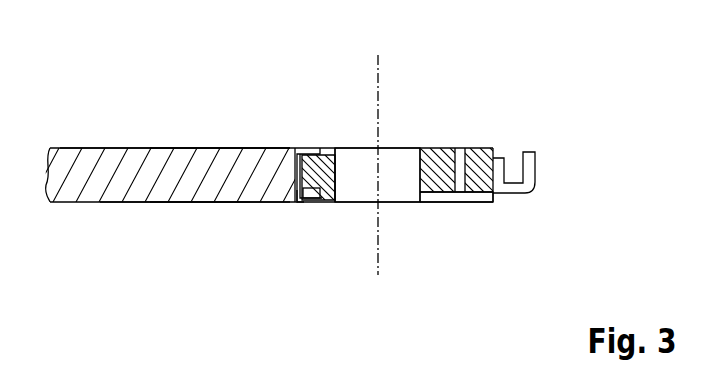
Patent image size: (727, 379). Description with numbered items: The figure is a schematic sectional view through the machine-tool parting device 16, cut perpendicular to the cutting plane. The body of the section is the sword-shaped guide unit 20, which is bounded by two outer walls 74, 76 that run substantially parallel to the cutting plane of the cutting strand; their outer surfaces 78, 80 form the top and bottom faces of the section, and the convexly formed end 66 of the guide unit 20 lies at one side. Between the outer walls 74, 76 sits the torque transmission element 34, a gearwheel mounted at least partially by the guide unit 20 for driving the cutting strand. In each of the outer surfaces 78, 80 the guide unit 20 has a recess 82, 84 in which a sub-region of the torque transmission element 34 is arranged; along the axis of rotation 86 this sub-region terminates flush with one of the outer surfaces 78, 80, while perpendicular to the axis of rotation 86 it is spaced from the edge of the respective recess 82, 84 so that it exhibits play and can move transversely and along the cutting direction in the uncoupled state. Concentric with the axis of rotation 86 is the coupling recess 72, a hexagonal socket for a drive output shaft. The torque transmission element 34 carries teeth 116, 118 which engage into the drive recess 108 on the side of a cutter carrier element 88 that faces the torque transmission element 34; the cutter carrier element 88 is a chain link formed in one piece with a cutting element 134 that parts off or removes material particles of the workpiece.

The machine-tool parting device 16 is at (532, 74).
The guide unit 20 is at (70, 203).
The torque transmission element 34 is at (325, 203).
The convexly formed end 66 is at (563, 237).
The coupling recess 72 is at (398, 182).
The outer wall 74 is at (172, 203).
The outer wall 76 is at (137, 147).
The outer surface 78 is at (222, 210).
The outer surface 80 is at (215, 140).
The recess 82 is at (318, 203).
The recess 84 is at (318, 148).
The axis of rotation 86 is at (378, 66).
The cutter carrier element 88 is at (485, 203).
The drive recess 108 is at (463, 148).
The tooth 116 is at (300, 203).
The tooth 118 is at (433, 203).
The cutting element 134 is at (535, 177).